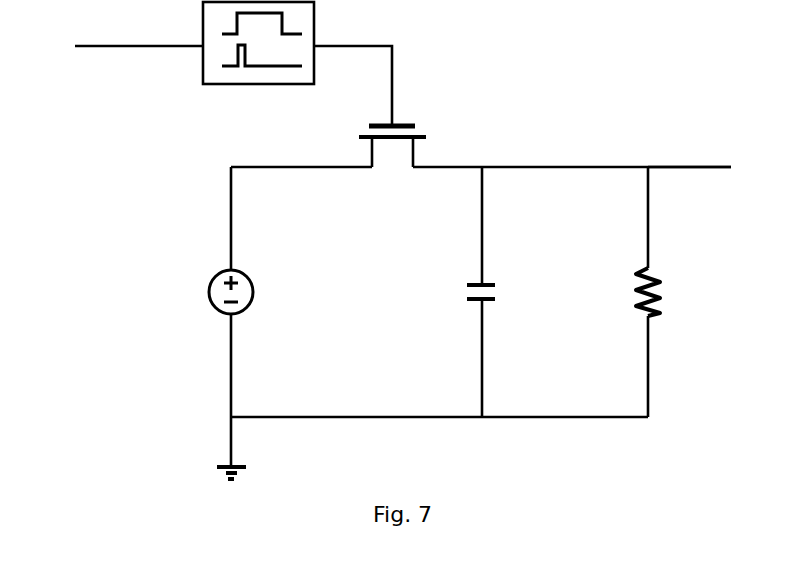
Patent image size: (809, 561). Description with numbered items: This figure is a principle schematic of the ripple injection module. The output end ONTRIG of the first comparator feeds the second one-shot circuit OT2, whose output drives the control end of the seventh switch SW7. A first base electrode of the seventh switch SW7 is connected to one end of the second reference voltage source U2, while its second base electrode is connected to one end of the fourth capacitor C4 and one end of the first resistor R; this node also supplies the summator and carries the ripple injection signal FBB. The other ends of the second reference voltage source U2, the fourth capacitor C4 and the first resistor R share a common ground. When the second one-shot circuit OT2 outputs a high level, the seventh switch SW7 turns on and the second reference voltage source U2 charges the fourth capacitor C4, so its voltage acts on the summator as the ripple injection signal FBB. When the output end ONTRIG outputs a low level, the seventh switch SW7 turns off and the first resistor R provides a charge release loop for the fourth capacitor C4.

The output end of the first comparator ONTRIG is at (139, 31).
The second one-shot circuit OT2 is at (297, 63).
The seventh switch SW7 is at (392, 180).
The second reference voltage source U2 is at (257, 317).
The fourth capacitor C4 is at (507, 292).
The first resistor R is at (671, 292).
The ripple injection signal FBB is at (689, 153).